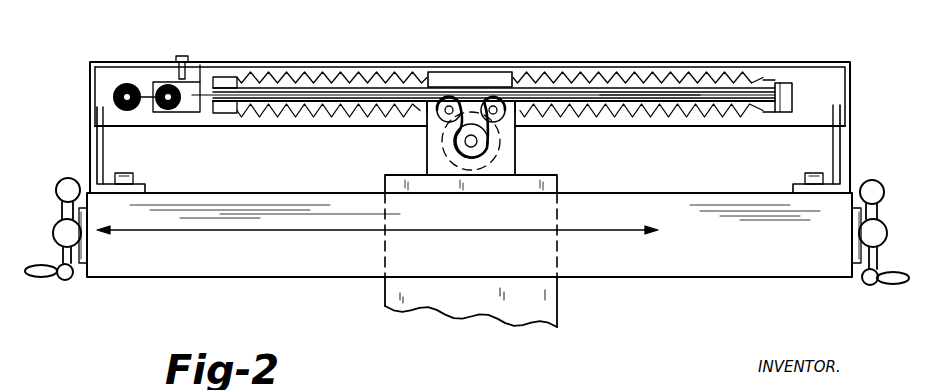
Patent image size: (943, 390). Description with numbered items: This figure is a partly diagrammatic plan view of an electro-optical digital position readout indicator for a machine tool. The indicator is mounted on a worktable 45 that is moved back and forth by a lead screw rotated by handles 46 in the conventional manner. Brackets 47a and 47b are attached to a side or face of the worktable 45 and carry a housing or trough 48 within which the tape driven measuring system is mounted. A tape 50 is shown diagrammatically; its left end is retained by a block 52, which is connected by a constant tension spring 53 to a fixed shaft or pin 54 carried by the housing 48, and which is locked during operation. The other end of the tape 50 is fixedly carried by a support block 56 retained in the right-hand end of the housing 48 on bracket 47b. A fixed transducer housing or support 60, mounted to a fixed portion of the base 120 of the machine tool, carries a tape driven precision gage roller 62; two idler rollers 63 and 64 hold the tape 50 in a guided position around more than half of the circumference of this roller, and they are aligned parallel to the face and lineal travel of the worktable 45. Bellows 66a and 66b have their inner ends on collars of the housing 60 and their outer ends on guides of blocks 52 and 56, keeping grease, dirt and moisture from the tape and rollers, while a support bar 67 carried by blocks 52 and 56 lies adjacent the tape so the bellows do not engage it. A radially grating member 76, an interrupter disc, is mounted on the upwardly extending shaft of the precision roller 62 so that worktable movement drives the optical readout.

The worktable 45 is at (120, 272).
The handles 46 is at (46, 280).
The bracket 47a is at (104, 150).
The bracket 47b is at (834, 141).
The housing or trough 48 is at (143, 62).
The tape 50 is at (203, 95).
The block 52 is at (195, 79).
The constant tension spring 53 is at (132, 82).
The fixed shaft or pin 54 is at (113, 96).
The support block 56 is at (783, 88).
The transducer housing or support 60 is at (455, 75).
The precision gage roller 62 is at (462, 143).
The idler roller 63 is at (440, 118).
The idler roller 64 is at (506, 110).
The bellows 66a is at (315, 78).
The bellows 66b is at (560, 78).
The support bar 67 is at (693, 92).
The radially grating member 76 is at (512, 150).
The base 120 is at (552, 293).